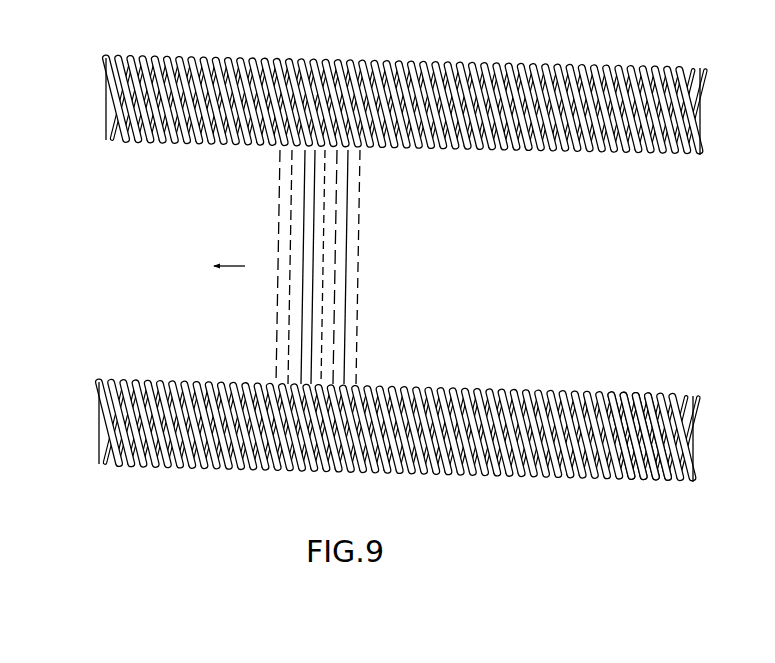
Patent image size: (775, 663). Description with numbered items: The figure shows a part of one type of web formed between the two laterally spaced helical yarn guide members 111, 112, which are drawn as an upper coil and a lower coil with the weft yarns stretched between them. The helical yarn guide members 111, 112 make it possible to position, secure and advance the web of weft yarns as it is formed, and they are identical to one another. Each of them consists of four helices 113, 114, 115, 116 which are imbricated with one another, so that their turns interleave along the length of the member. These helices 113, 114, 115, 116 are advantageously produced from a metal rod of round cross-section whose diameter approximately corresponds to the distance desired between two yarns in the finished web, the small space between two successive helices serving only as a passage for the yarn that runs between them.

The helical yarn guide member 111 is at (700, 443).
The helical yarn guide member 112 is at (707, 98).
The helix 113 is at (646, 391).
The helix 114 is at (631, 391).
The helix 115 is at (618, 391).
The helix 116 is at (607, 392).